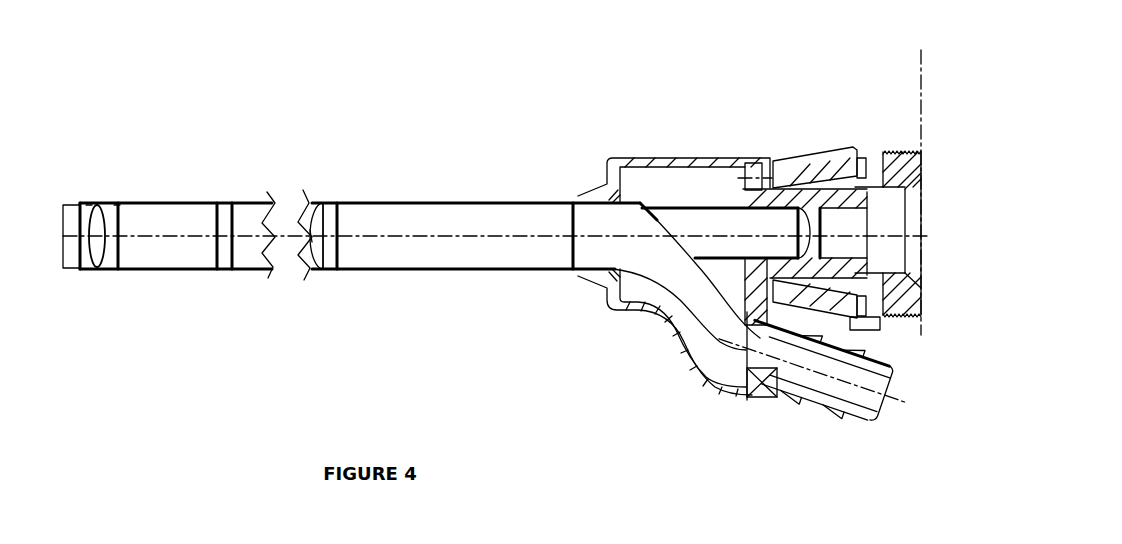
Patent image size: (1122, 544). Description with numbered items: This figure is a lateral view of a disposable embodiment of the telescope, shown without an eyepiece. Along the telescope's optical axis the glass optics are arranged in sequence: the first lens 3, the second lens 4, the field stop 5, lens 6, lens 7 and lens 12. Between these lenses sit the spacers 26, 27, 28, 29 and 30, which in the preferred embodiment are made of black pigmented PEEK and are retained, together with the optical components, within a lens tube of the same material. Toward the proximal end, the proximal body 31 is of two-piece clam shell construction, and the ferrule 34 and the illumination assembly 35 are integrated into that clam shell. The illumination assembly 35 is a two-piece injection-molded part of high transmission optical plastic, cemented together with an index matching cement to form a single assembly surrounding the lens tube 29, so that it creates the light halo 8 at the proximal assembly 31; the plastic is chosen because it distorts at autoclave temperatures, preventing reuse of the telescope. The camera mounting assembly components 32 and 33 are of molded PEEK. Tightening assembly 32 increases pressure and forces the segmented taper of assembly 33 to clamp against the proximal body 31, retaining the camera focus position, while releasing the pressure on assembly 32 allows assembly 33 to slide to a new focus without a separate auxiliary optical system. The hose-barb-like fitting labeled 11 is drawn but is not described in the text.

The lens #1 3 is at (72, 242).
The lens #2 4 is at (100, 247).
The field stop 5 is at (118, 270).
The lens 6 is at (216, 270).
The lens 7 is at (312, 267).
The light halo ring of fibers 8 is at (573, 243).
The hose barb fitting 11 is at (872, 410).
The lens 12 is at (802, 245).
The spacer 26 is at (89, 207).
The spacer 27 is at (117, 208).
The spacer 28 is at (187, 207).
The spacer 29 is at (365, 200).
The spacer 30 is at (448, 200).
The proximal body 31 is at (778, 190).
The camera mounting assembly component 32 is at (858, 137).
The camera mounting assembly component 33 is at (895, 147).
The ferrule 34 is at (812, 405).
The illumination assembly 35 is at (730, 345).